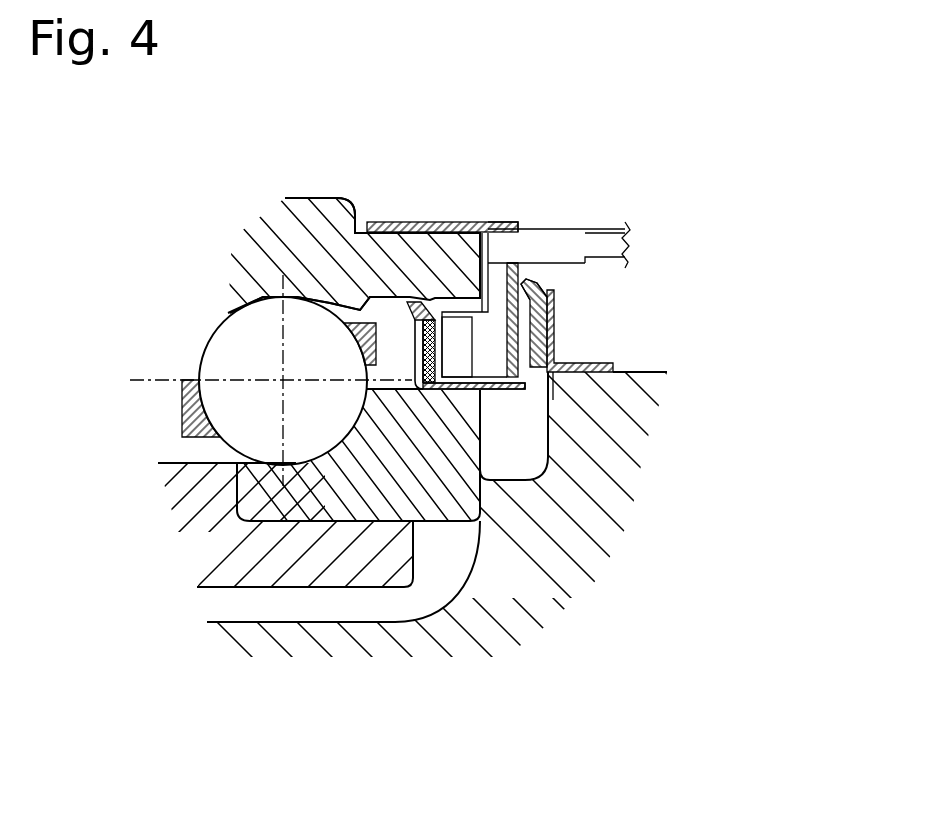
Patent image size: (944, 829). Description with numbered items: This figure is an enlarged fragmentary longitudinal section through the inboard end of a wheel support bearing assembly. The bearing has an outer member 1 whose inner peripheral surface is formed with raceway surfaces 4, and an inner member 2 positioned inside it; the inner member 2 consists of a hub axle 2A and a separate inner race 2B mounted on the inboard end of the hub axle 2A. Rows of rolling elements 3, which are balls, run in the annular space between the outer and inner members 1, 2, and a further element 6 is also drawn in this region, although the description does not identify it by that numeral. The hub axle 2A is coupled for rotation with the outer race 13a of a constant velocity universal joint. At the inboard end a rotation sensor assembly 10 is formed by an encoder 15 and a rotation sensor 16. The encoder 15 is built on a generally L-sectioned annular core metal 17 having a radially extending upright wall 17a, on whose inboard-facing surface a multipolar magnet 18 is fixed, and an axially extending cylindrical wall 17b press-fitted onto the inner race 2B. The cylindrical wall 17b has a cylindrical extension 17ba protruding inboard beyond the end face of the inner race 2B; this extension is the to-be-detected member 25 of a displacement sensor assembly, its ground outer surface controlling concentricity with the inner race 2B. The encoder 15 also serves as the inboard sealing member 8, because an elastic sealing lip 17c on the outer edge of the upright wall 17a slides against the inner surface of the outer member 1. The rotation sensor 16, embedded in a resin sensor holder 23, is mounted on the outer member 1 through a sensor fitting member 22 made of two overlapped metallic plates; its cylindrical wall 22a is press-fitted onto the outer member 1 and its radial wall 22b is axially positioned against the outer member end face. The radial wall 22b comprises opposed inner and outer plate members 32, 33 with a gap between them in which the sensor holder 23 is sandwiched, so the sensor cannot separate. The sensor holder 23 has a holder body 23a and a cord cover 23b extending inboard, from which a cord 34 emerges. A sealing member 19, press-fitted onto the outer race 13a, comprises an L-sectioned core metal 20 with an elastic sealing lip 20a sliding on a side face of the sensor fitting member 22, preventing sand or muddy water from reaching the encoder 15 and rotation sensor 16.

The outer member 1 is at (278, 196).
The inner member 2 is at (44, 488).
The hub axle 2A is at (240, 560).
The inner race 2B is at (313, 497).
The rolling elements 3 is at (222, 362).
The raceway surfaces 4 is at (206, 317).
The retaining ring 6 is at (182, 424).
The inboard sealing member 8 is at (445, 227).
The rotation sensor assembly 10 is at (478, 62).
The outer race 13a is at (655, 370).
The encoder 15 is at (445, 227).
The rotation sensor 16 is at (450, 318).
The core metal 17 is at (428, 388).
The upright wall 17a is at (412, 298).
The cylindrical wall 17b is at (483, 521).
The sealing lip 17c is at (357, 220).
The cylindrical extension 17ba is at (659, 450).
The to-be-detected member 25 is at (548, 432).
The multipolar magnet 18 is at (437, 386).
The sealing member 19 is at (604, 357).
The core metal 20 is at (639, 304).
The sealing lip 20a is at (540, 284).
The sensor fitting member 22 is at (569, 183).
The cylindrical wall 22a is at (405, 222).
The radial wall 22b is at (580, 226).
The sensor holder 23 is at (596, 248).
The holder body 23a is at (510, 262).
The cord cover 23b is at (558, 240).
The inner plate member 32 is at (458, 383).
The outer plate member 33 is at (558, 390).
The cord 34 is at (615, 228).